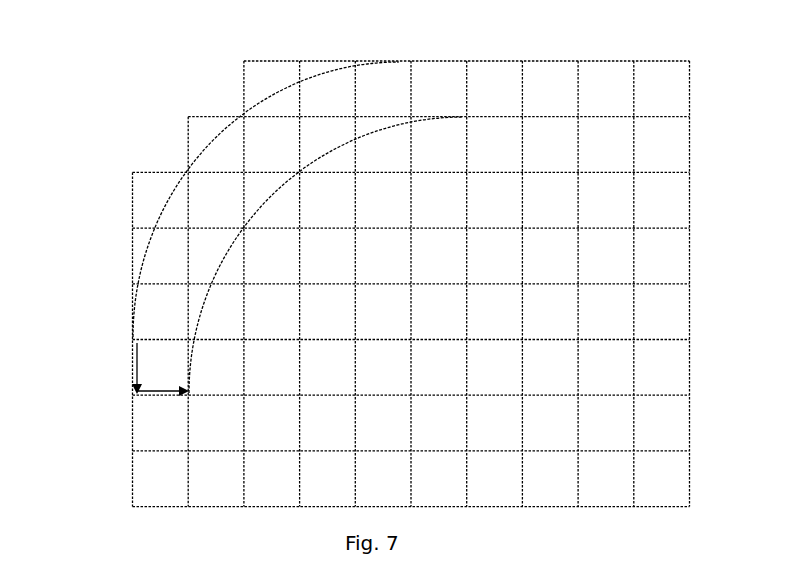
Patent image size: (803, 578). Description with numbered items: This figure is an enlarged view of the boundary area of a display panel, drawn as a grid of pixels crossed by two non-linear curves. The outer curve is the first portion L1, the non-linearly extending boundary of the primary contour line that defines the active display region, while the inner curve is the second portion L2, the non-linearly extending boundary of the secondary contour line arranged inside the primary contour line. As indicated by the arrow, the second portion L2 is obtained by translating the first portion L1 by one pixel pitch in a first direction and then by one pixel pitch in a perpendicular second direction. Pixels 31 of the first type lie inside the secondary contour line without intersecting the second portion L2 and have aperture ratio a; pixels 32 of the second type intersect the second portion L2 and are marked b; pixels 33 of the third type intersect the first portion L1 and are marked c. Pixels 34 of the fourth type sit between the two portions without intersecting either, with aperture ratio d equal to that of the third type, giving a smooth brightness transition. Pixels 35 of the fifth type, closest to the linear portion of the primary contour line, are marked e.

The pixel of first type 31 is at (538, 140).
The pixel of second type 32 is at (432, 153).
The pixel of third type 33 is at (233, 150).
The pixel of fourth type 34 is at (280, 130).
The pixel of fifth type 35 is at (148, 438).
The first portion L1 is at (315, 78).
The second portion L2 is at (267, 200).